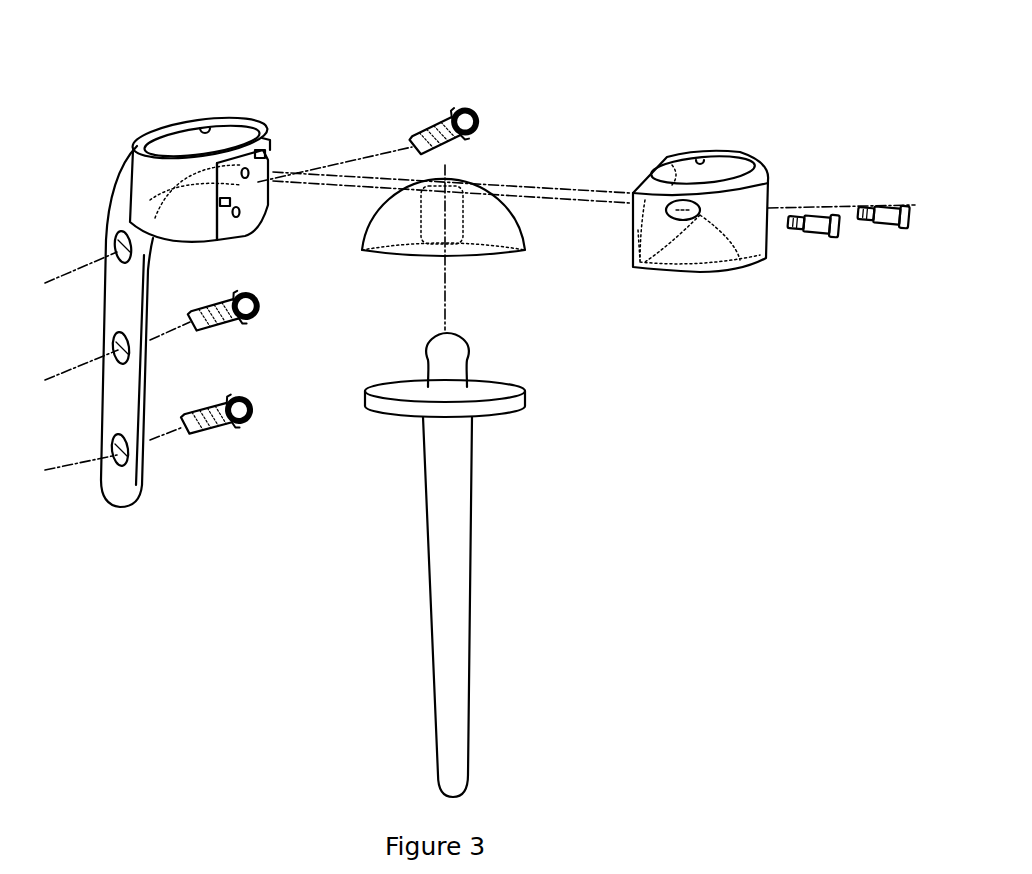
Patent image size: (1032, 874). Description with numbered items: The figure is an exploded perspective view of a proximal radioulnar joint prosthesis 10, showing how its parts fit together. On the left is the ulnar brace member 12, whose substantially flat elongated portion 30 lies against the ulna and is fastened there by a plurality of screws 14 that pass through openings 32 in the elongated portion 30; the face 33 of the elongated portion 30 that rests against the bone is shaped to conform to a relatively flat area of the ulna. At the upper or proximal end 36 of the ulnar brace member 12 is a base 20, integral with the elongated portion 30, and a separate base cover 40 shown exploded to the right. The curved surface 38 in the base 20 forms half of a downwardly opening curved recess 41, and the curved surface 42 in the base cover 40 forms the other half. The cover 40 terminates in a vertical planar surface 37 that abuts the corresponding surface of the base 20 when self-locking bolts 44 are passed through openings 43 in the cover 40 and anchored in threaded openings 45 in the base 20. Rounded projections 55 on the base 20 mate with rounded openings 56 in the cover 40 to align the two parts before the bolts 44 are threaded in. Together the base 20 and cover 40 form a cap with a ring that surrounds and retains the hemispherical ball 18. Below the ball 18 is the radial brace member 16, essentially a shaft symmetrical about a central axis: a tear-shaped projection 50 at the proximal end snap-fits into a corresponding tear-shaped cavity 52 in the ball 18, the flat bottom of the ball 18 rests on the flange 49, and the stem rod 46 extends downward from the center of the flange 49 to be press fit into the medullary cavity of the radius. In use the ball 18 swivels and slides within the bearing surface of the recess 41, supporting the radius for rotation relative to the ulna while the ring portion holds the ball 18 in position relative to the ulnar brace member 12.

The proximal radioulnar joint prosthesis 10 is at (722, 72).
The ulnar brace member 12 is at (124, 320).
The screws 14 is at (218, 432).
The radial brace member 16 is at (480, 564).
The hemispherical ball 18 is at (470, 239).
The base 20 is at (221, 170).
The elongated portion 30 is at (152, 326).
The openings 32 is at (127, 470).
The face 33 is at (138, 310).
The proximal end 36 is at (136, 143).
The vertical planar surface 37 is at (632, 215).
The curved surface 38 is at (280, 192).
The base cover 40 is at (699, 214).
The curved recess 41 is at (244, 205).
The curved surface 42 is at (630, 268).
The openings 43 is at (770, 200).
The self-locking bolts 44 is at (887, 220).
The threaded openings 45 is at (186, 248).
The stem rod 46 is at (462, 607).
The flange 49 is at (522, 400).
The tear-shaped projection 50 is at (472, 356).
The tear-shaped cavity 52 is at (420, 232).
The rounded projections 55 is at (230, 250).
The rounded openings 56 is at (625, 250).